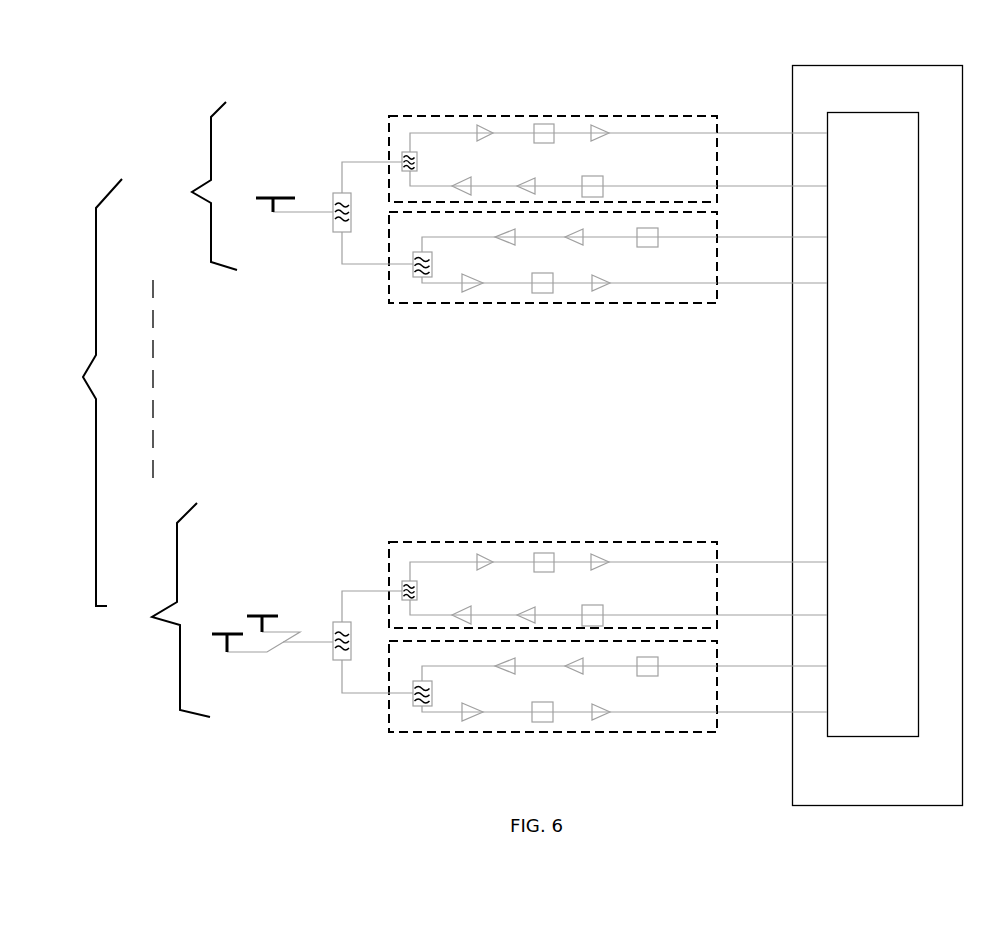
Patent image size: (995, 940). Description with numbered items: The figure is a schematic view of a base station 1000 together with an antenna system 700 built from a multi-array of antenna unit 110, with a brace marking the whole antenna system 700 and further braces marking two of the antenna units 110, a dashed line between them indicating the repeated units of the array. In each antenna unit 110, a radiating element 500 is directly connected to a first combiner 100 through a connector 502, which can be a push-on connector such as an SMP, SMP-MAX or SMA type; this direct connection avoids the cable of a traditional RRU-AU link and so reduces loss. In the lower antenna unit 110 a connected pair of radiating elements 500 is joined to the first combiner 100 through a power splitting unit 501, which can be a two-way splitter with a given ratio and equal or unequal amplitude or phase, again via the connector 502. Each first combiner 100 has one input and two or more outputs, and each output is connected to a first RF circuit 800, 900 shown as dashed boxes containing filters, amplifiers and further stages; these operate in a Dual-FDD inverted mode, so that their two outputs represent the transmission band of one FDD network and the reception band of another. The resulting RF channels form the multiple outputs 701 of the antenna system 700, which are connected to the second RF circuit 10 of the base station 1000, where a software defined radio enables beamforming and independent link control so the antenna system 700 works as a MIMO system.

The base station 1000 is at (227, 30).
The second RF circuit 10 is at (887, 65).
The outputs 701 is at (772, 409).
The antenna system 700 is at (243, 392).
The antenna unit 110 is at (173, 409).
The first RF circuit 800 is at (388, 123).
The first RF circuit 900 is at (388, 293).
The connector 502 is at (315, 211).
The first combiner 100 is at (342, 213).
The radiating element 500 is at (287, 195).
The power splitting unit 501 is at (283, 643).